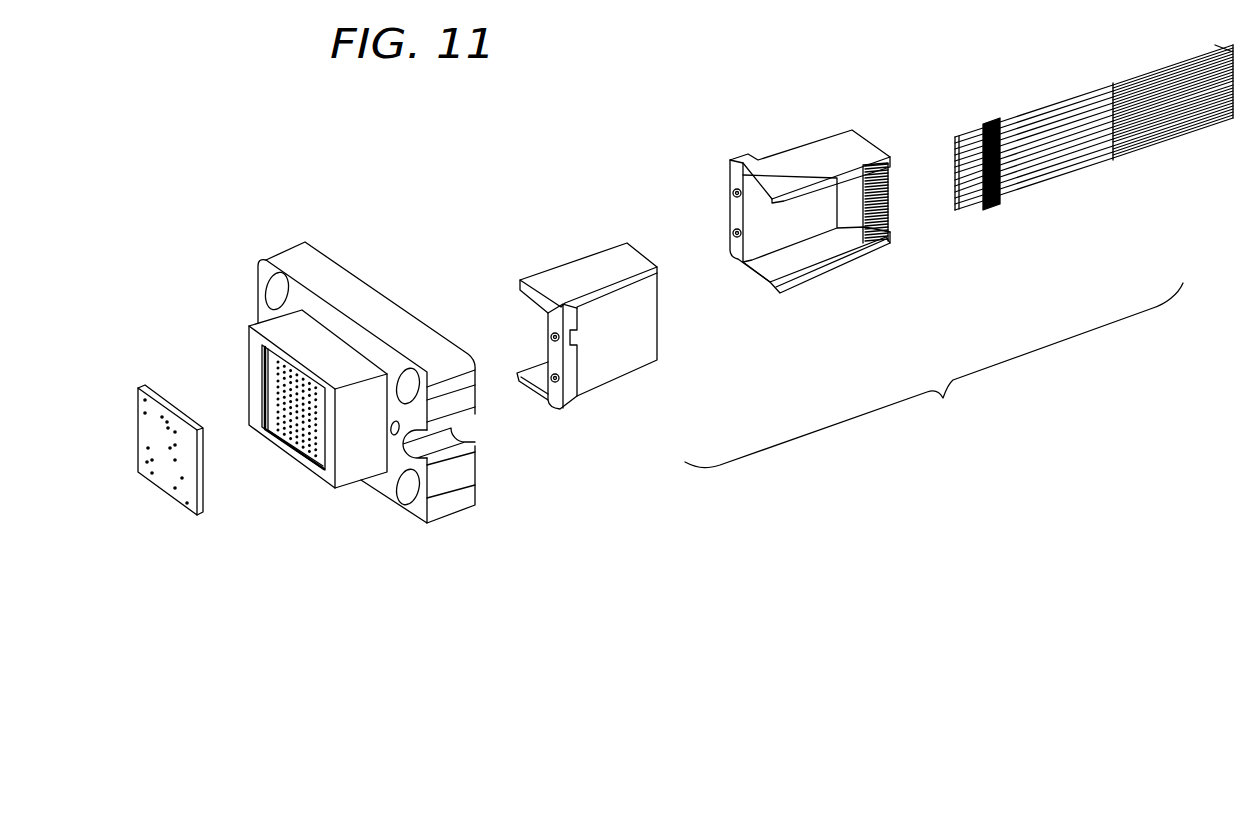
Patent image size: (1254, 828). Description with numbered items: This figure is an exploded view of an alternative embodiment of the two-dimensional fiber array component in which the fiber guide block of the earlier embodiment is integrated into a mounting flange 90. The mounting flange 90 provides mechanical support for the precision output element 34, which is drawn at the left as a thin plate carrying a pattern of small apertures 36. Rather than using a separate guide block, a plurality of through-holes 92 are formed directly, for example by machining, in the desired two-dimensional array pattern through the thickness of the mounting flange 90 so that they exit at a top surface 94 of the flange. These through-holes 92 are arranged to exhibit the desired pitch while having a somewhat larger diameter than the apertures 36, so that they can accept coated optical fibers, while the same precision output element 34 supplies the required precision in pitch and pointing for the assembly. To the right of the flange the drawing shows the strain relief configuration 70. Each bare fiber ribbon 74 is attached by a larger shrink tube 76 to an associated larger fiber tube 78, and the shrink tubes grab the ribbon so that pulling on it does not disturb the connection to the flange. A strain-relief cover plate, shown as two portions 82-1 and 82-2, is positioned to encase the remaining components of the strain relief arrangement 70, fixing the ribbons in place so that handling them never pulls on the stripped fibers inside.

The precision output element 34 is at (207, 493).
The apertures 36 is at (135, 406).
The strain relief configuration 70 is at (934, 375).
The bare fiber ribbon 74 is at (1167, 143).
The larger shrink tube 76 is at (1030, 105).
The fiber tube 78 is at (977, 210).
The first portion of strain-relief cover plate 82-1 is at (813, 153).
The second portion of strain-relief cover plate 82-2 is at (613, 372).
The mounting flange 90 is at (292, 253).
The through-holes 92 is at (288, 427).
The top surface 94 is at (330, 488).